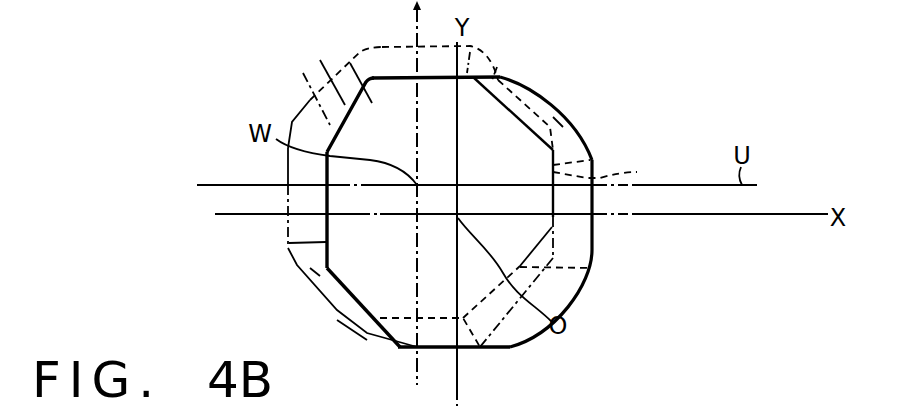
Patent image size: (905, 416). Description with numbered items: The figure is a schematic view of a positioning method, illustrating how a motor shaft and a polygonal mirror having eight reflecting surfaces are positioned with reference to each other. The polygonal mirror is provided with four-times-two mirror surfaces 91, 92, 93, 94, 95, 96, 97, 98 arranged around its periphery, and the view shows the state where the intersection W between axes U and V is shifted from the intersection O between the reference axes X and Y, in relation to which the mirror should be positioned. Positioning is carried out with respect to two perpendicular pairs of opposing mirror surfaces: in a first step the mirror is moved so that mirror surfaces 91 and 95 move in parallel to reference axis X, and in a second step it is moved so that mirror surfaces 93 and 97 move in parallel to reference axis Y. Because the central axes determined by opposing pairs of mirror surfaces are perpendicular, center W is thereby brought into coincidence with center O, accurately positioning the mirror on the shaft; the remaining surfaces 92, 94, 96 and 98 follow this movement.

The mirror surface 91 is at (382, 47).
The mirror surface 92 is at (303, 73).
The mirror surface 93 is at (285, 169).
The mirror surface 94 is at (337, 318).
The mirror surface 95 is at (380, 350).
The mirror surface 96 is at (592, 268).
The mirror surface 97 is at (585, 157).
The mirror surface 98 is at (550, 103).